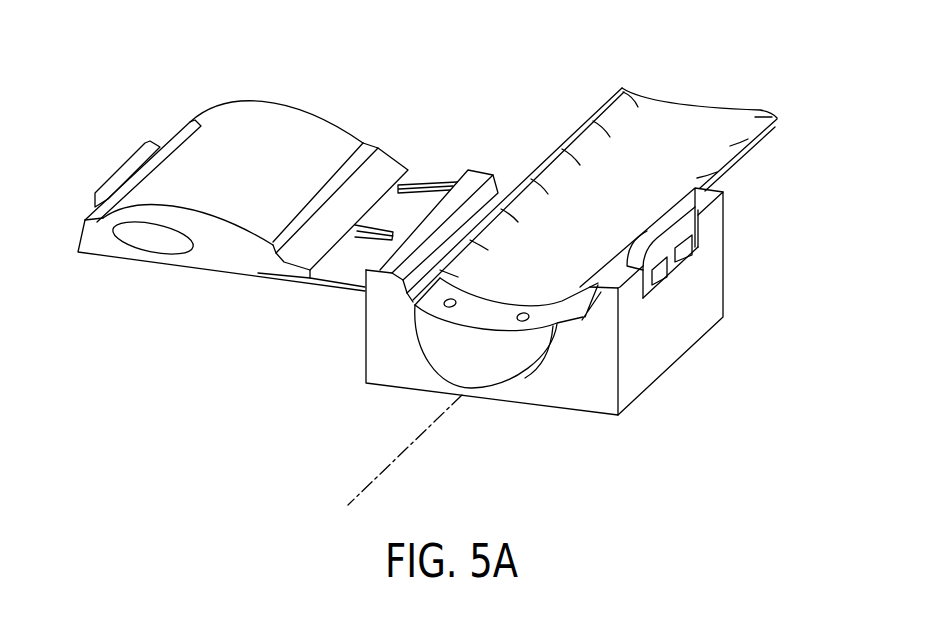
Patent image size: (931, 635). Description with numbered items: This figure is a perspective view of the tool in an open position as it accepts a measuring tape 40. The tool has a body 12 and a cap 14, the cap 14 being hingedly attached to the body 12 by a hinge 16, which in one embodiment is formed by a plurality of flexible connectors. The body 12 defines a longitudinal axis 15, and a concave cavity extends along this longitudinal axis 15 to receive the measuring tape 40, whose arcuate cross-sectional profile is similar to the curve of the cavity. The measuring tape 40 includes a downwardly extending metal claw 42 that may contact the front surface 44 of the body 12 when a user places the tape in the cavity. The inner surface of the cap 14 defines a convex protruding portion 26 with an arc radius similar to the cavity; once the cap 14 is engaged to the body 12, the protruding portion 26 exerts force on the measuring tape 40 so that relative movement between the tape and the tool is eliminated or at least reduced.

The body 12 is at (577, 301).
The cap 14 is at (162, 295).
The longitudinal axis 15 is at (415, 443).
The hinge 16 is at (446, 156).
The protruding portion 26 is at (308, 100).
The measuring tape 40 is at (700, 90).
The metal claw 42 is at (513, 363).
The front surface 44 is at (383, 360).